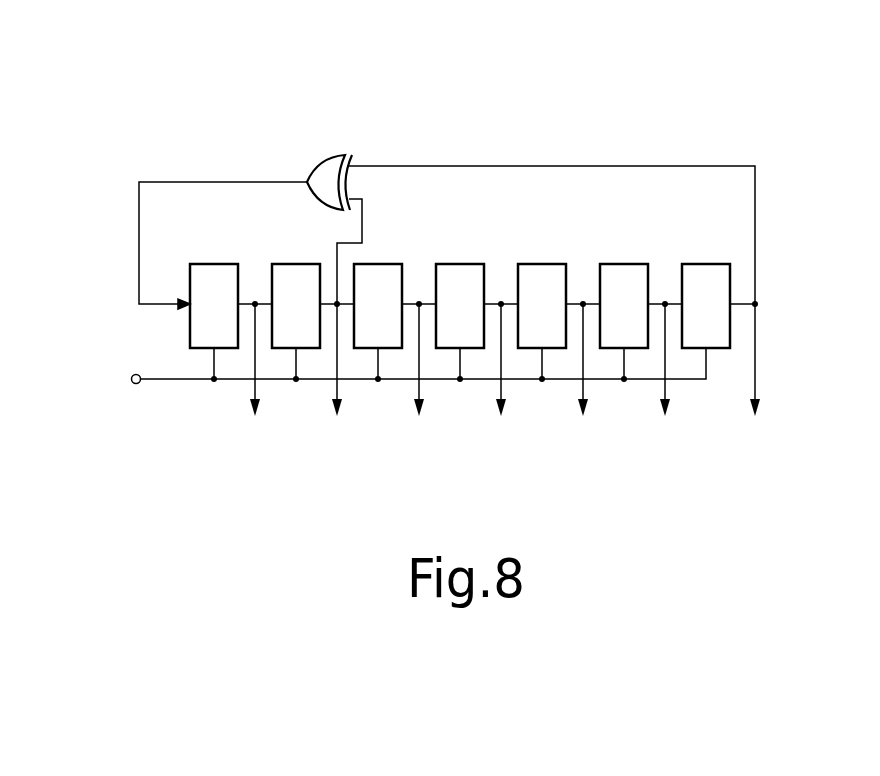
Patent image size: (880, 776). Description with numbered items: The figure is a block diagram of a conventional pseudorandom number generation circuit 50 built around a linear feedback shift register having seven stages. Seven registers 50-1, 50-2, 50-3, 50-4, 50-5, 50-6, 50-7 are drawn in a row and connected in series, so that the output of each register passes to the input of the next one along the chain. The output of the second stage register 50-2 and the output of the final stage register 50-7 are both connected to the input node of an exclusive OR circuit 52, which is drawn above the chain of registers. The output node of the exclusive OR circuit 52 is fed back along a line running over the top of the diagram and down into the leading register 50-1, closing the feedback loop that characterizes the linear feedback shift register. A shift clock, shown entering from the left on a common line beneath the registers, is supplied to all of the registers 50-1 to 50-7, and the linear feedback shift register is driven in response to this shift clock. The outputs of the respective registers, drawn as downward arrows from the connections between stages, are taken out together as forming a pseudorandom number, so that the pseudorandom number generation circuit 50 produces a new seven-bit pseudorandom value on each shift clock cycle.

The pseudorandom number generation circuit 50 is at (122, 123).
The exclusive OR circuit 52 is at (327, 154).
The leading register 50-1 is at (215, 263).
The second stage register 50-2 is at (296, 263).
The register 50-3 is at (393, 263).
The register 50-4 is at (469, 263).
The register 50-5 is at (552, 263).
The register 50-6 is at (633, 263).
The final stage register 50-7 is at (715, 263).